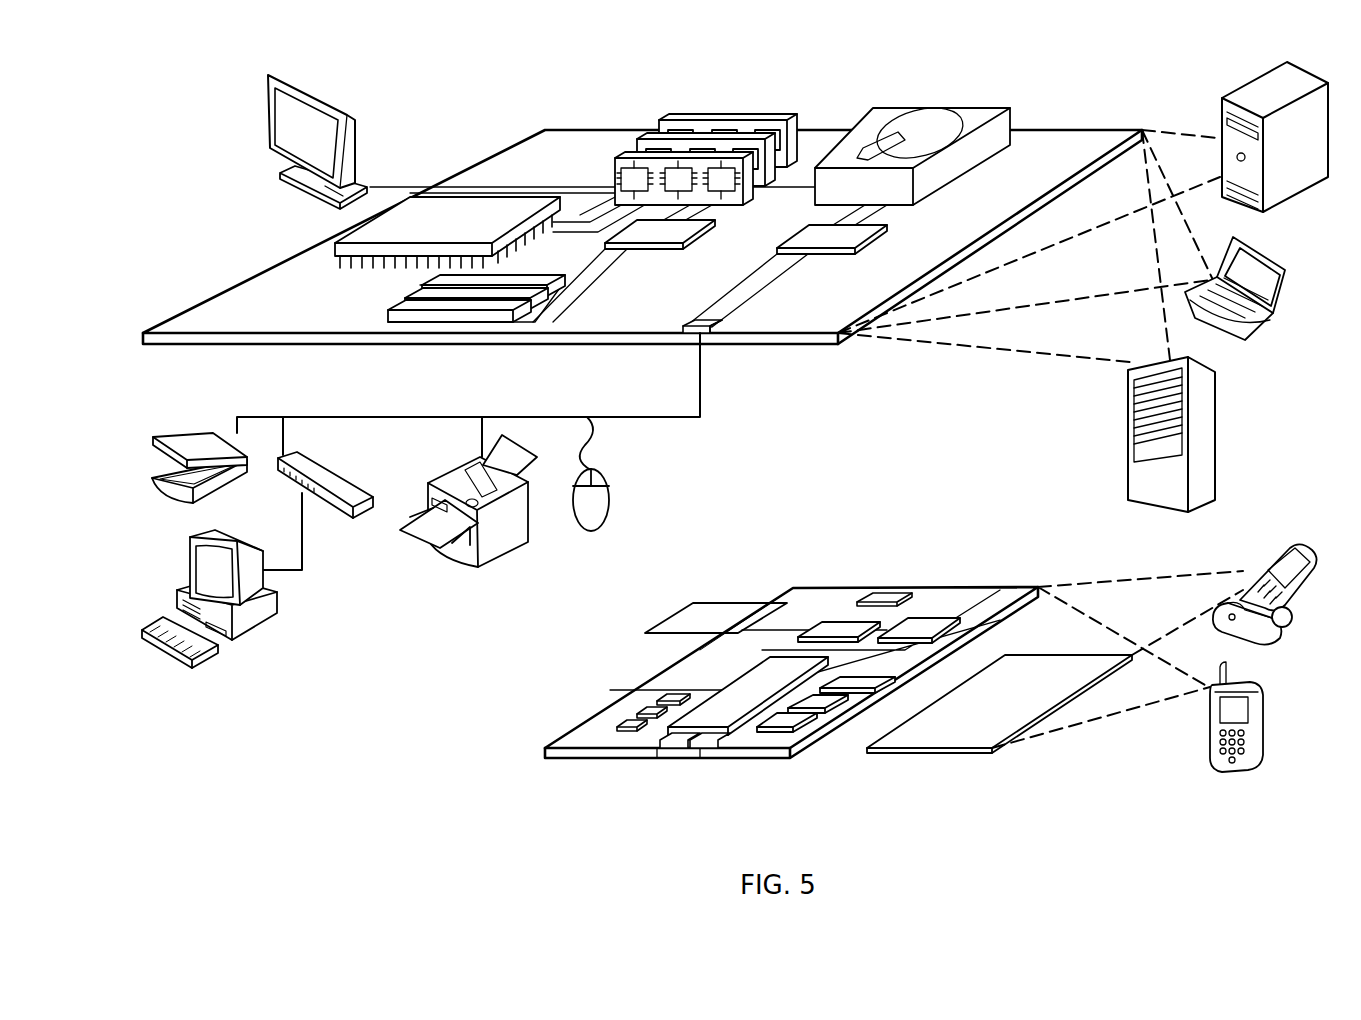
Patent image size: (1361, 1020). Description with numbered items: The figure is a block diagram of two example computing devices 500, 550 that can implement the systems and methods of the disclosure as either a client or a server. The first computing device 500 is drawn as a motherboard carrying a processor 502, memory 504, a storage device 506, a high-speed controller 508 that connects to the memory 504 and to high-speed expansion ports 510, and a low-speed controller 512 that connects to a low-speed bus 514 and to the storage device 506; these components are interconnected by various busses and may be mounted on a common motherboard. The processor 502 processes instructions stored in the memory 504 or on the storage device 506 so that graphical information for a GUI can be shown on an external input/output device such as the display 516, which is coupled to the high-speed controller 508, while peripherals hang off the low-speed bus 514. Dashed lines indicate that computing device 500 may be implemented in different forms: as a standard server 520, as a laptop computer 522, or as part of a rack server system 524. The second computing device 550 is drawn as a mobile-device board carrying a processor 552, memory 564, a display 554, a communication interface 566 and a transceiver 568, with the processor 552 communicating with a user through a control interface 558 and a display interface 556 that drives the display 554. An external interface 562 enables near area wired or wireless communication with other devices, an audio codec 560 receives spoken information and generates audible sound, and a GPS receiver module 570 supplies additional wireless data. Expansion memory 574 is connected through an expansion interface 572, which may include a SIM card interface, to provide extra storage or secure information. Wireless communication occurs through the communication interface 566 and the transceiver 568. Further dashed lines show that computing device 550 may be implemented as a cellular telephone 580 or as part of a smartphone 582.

The computing device 500 is at (178, 80).
The processor 502 is at (335, 246).
The memory 504 is at (675, 122).
The storage device 506 is at (905, 118).
The high-speed controller 508 is at (640, 235).
The high-speed expansion ports 510 is at (415, 312).
The low-speed controller 512 is at (812, 235).
The low-speed bus 514 is at (705, 333).
The display 516 is at (270, 74).
The standard server 520 is at (1222, 116).
The laptop computer 522 is at (1290, 266).
The rack server system 524 is at (1130, 455).
The computing device 550 is at (515, 762).
The processor 552 is at (722, 718).
The display 554 is at (962, 740).
The display interface 556 is at (798, 730).
The control interface 558 is at (820, 712).
The audio codec 560 is at (850, 690).
The external interface 562 is at (688, 750).
The memory 564 is at (636, 710).
The communication interface 566 is at (835, 628).
The transceiver 568 is at (918, 625).
The GPS receiver module 570 is at (890, 600).
The expansion interface 572 is at (762, 603).
The expansion memory 574 is at (698, 603).
The cellular telephone 580 is at (1262, 545).
The smartphone 582 is at (1212, 722).